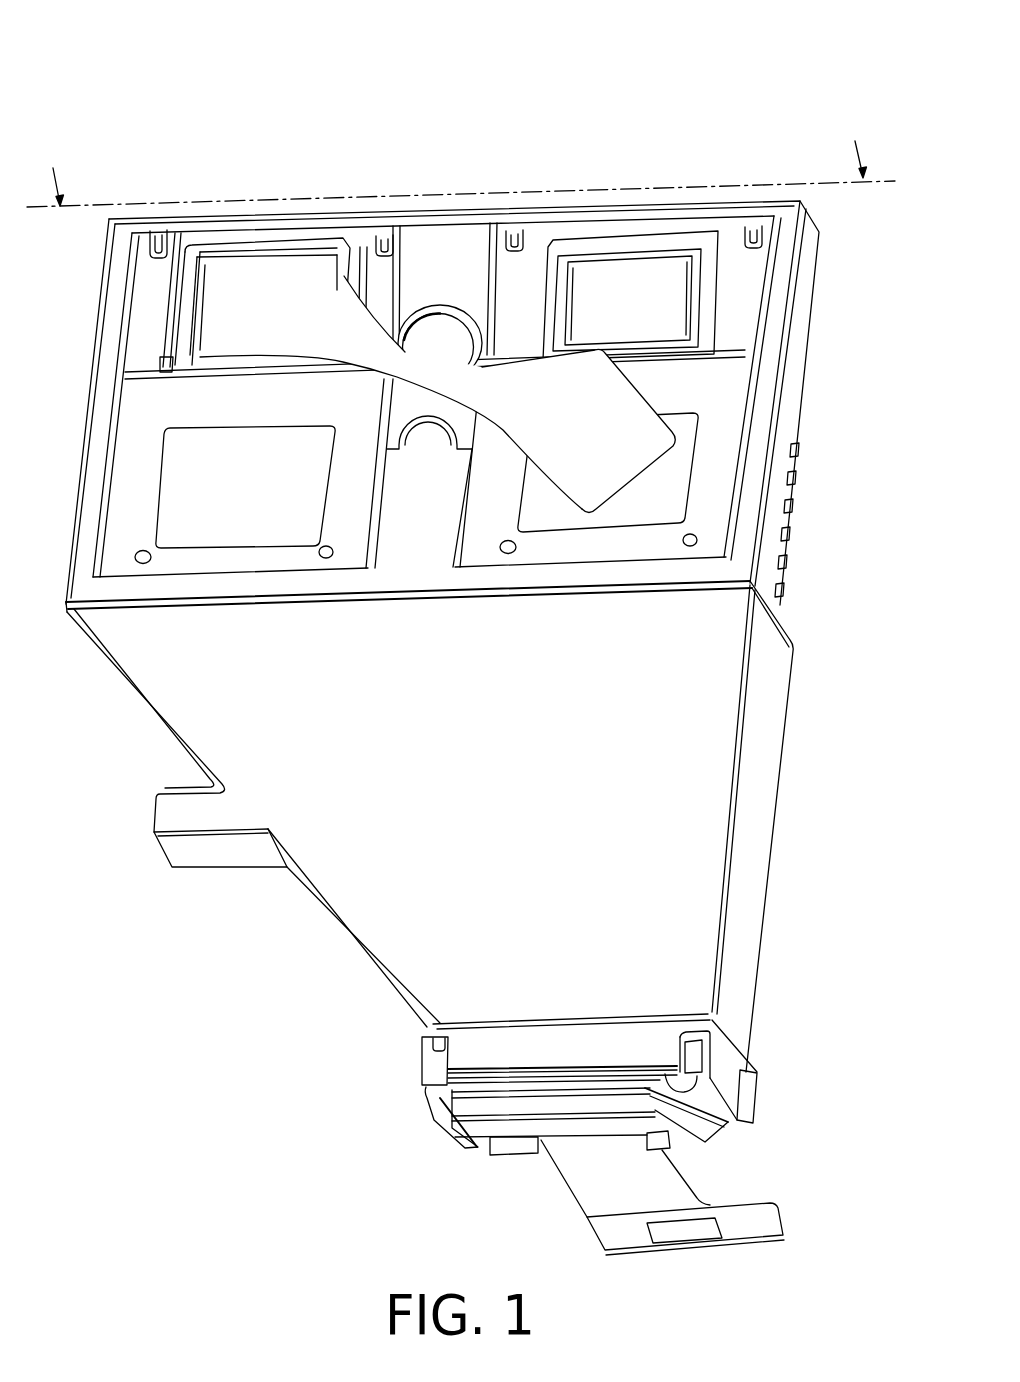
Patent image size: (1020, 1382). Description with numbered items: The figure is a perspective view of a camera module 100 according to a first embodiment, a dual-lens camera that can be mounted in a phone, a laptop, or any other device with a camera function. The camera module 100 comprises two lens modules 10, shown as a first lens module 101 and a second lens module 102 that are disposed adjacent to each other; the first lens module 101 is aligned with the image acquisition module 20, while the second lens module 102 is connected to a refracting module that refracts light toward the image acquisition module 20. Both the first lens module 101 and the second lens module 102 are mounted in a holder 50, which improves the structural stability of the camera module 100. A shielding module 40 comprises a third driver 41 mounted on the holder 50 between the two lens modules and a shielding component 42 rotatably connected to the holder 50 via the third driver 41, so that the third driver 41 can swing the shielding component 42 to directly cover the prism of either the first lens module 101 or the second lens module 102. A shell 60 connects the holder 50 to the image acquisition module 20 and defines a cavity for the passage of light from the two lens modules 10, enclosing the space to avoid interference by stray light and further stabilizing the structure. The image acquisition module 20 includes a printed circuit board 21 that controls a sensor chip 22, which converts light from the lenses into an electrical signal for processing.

The camera module 100 is at (511, 41).
The lens modules 10 is at (706, 149).
The first lens module 101 is at (638, 357).
The second lens module 102 is at (149, 357).
The image acquisition module 20 is at (533, 1217).
The printed circuit board 21 is at (630, 1173).
The sensor chip 22 is at (491, 1057).
The shielding module 40 is at (872, 387).
The third driver 41 is at (447, 345).
The shielding component 42 is at (612, 450).
The holder 50 is at (393, 578).
The shell 60 is at (370, 912).